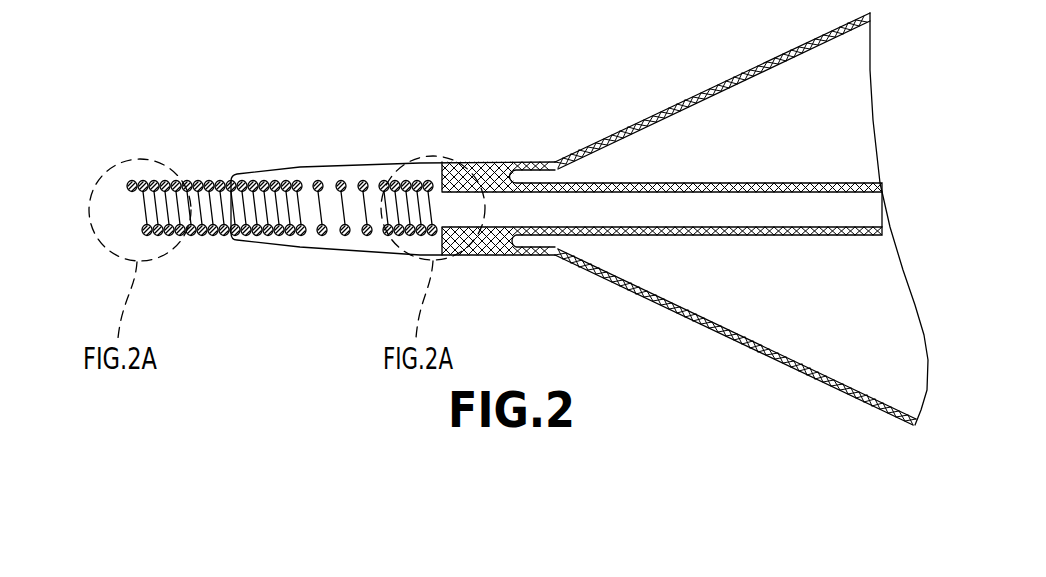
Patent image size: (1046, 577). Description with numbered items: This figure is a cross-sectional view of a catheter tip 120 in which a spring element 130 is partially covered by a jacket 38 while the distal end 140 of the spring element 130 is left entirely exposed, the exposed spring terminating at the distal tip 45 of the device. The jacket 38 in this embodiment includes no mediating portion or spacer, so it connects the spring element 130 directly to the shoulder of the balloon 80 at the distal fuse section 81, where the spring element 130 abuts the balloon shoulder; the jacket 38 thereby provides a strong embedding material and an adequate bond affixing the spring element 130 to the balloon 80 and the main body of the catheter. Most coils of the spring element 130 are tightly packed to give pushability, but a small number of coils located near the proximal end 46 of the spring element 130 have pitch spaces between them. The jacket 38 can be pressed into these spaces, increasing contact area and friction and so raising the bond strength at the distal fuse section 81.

The catheter tip 120 is at (280, 108).
The jacket 38 is at (372, 174).
The distal end of the spring element 140 is at (232, 149).
The spring element 130 is at (202, 222).
The distal tip 45 is at (132, 190).
The proximal end of the spring element 46 is at (434, 176).
The balloon 80 is at (755, 123).
The distal fuse section 81 is at (493, 243).